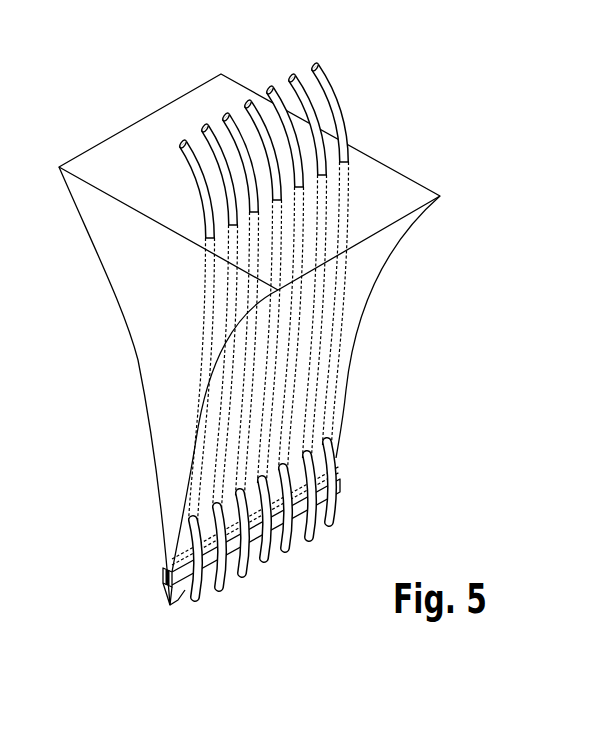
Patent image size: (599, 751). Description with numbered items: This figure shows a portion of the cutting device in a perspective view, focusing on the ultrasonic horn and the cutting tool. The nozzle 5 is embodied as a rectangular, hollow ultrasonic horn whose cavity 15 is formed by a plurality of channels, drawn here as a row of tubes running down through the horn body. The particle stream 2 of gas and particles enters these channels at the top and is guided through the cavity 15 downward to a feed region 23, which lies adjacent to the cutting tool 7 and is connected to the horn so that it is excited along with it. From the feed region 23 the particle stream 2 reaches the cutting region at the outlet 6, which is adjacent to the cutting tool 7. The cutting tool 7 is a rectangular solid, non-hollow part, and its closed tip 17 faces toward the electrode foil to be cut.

The particle stream 2 is at (311, 60).
The nozzle 5 is at (152, 370).
The cavity 15 is at (209, 294).
The feed region 23 is at (250, 546).
The cutting tool 7 is at (165, 587).
The closed tip 17 is at (170, 603).
The outlet 6 is at (192, 604).